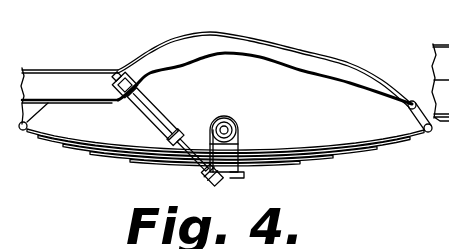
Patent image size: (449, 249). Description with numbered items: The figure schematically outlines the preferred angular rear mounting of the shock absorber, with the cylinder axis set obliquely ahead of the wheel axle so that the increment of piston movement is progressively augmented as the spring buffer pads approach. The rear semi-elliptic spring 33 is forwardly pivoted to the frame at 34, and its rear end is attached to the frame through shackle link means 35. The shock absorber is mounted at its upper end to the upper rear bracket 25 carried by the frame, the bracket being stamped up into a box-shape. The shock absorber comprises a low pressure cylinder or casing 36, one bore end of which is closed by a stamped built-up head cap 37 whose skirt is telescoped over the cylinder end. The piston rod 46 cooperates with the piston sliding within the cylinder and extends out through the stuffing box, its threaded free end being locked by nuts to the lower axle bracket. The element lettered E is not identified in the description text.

The upper rear bracket 25 is at (124, 72).
The rear semi-elliptic spring 33 is at (331, 153).
The forward pivot 34 is at (24, 130).
The shackle link means 35 is at (428, 132).
The low pressure cylinder or casing 36 is at (162, 111).
The head cap 37 is at (175, 101).
The piston rod 46 is at (188, 128).
The spring clip bracket E is at (237, 127).